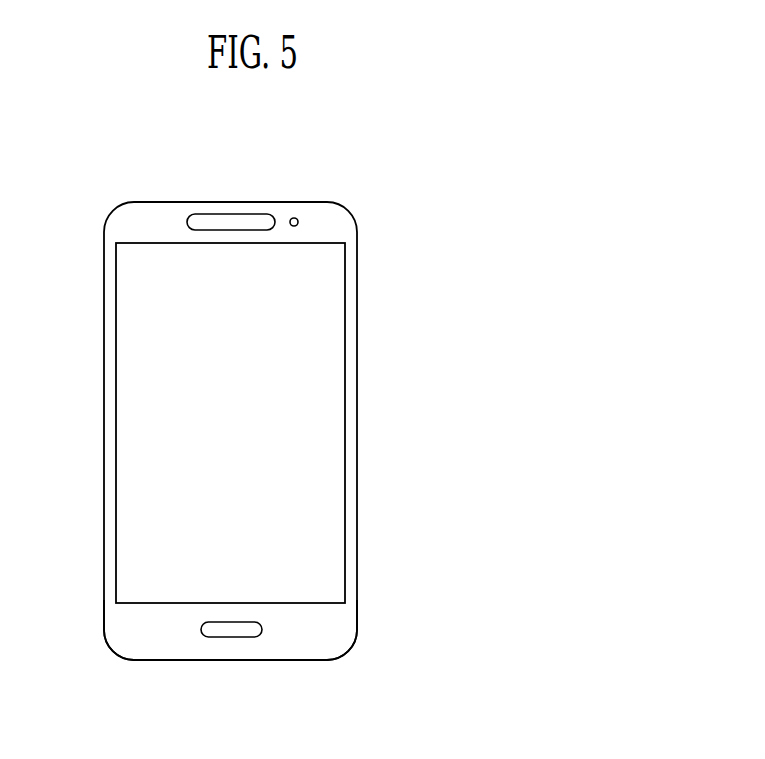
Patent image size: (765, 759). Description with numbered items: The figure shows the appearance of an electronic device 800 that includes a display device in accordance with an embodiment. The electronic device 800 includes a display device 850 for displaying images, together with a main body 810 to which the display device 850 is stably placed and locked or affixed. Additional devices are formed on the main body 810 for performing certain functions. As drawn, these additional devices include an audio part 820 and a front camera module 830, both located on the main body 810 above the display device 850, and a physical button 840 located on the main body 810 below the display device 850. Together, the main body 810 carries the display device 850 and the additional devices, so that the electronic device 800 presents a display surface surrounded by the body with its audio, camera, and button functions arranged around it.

The electronic device 800 is at (375, 158).
The main body 810 is at (162, 630).
The audio part 820 is at (242, 224).
The front camera module 830 is at (297, 218).
The physical button 840 is at (240, 633).
The display device 850 is at (333, 418).